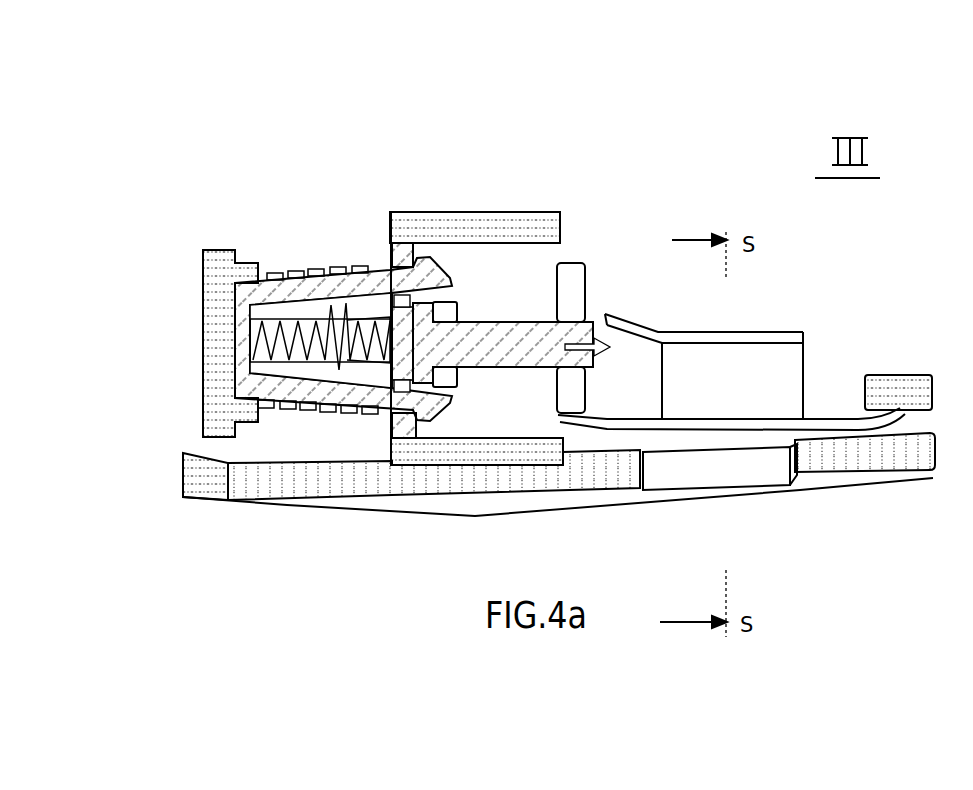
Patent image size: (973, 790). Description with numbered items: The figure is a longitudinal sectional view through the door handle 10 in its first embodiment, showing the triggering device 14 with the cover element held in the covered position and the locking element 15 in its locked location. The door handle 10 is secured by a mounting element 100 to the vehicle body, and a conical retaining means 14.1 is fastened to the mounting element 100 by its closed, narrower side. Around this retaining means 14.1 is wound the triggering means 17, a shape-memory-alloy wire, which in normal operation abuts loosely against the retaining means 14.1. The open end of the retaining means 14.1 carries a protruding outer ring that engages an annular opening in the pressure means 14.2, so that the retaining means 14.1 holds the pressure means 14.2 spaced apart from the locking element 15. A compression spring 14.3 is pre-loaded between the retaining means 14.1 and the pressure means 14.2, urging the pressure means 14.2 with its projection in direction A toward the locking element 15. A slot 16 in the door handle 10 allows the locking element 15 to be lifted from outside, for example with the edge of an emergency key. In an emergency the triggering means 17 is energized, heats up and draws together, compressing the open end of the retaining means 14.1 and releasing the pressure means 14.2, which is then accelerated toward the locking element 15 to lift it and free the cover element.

The door handle 10 is at (285, 488).
The triggering device 14 is at (615, 220).
The retaining means 14.1 is at (437, 250).
The pressure means 14.2 is at (400, 258).
The compression spring 14.3 is at (338, 300).
The locking element 15 is at (787, 385).
The slot 16 is at (750, 475).
The triggering means 17 is at (298, 272).
The mounting element 100 is at (905, 388).